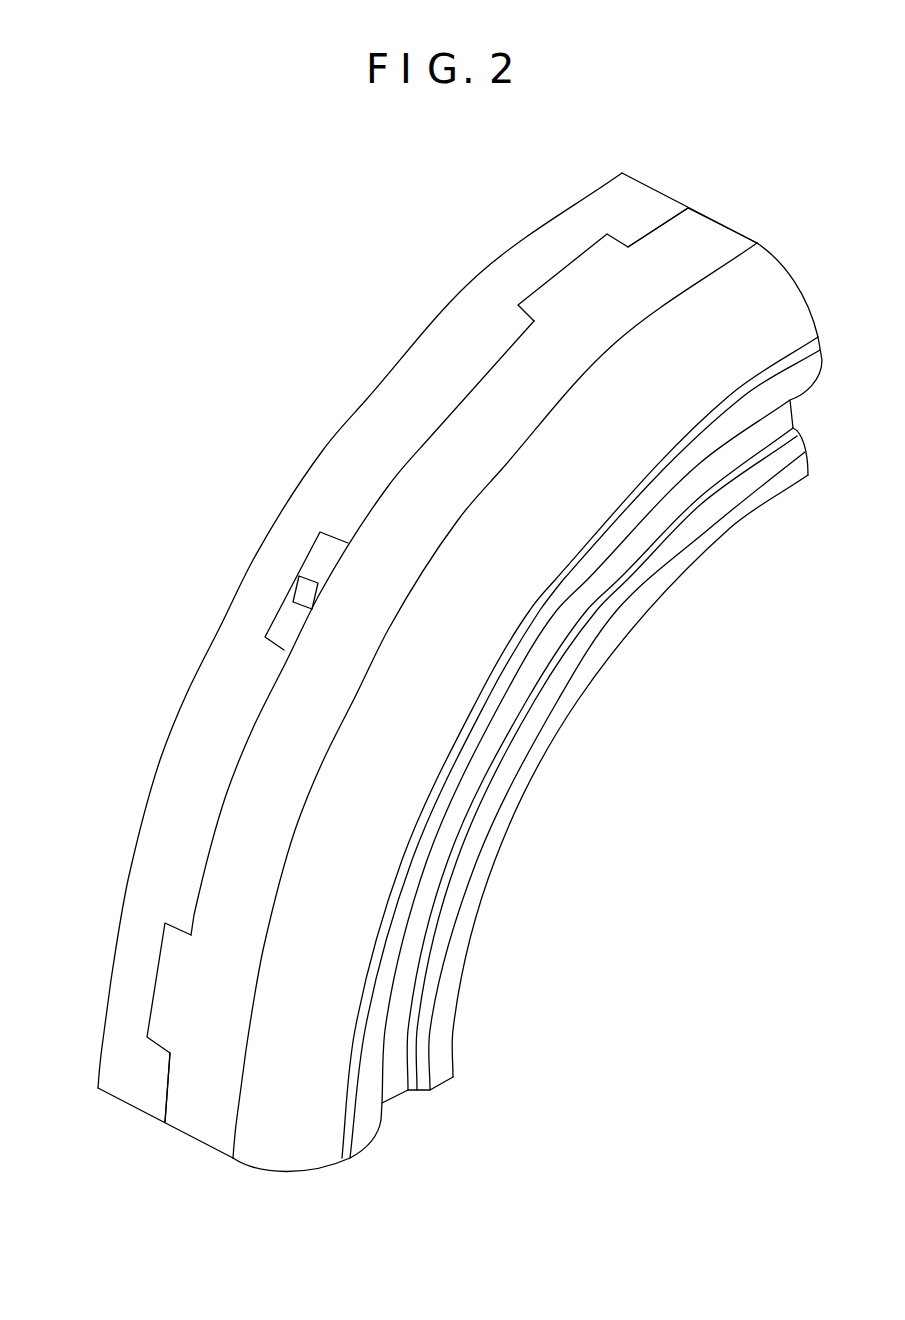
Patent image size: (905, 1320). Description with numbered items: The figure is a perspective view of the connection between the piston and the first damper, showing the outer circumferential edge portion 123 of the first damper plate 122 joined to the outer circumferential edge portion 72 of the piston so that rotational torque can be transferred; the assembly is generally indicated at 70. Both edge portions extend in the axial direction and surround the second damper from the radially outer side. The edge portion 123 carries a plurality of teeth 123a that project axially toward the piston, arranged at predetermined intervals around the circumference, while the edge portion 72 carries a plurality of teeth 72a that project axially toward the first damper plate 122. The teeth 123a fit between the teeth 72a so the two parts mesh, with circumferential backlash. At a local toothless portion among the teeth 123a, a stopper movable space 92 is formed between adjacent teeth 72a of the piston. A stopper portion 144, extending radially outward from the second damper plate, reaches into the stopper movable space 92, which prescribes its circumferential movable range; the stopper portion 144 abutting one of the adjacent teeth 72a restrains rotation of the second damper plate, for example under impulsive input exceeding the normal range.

The arc-shaped member 70 is at (380, 322).
The outer circumferential edge portion 72 is at (455, 328).
The teeth 72a is at (648, 220).
The teeth 123a is at (572, 285).
The outer circumferential edge portion 123 is at (707, 235).
The first damper plate 122 is at (753, 230).
The stopper portion 144 is at (316, 578).
The stopper movable space 92 is at (301, 631).